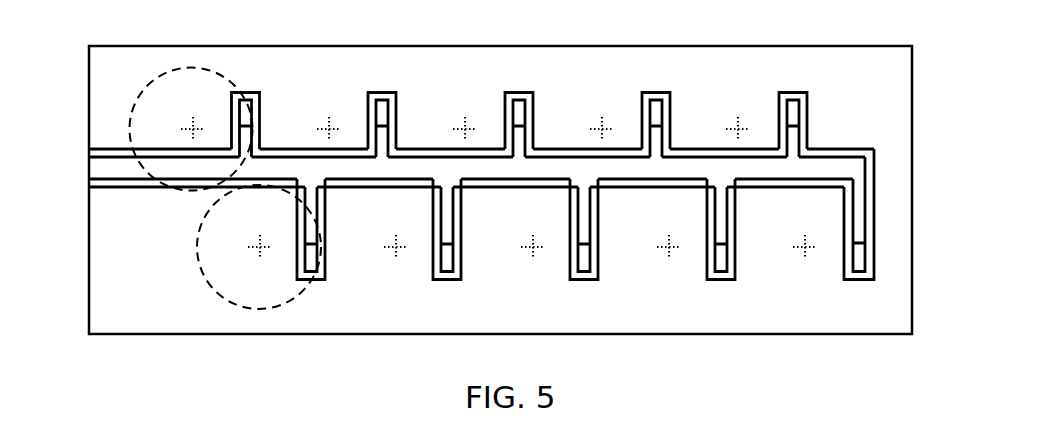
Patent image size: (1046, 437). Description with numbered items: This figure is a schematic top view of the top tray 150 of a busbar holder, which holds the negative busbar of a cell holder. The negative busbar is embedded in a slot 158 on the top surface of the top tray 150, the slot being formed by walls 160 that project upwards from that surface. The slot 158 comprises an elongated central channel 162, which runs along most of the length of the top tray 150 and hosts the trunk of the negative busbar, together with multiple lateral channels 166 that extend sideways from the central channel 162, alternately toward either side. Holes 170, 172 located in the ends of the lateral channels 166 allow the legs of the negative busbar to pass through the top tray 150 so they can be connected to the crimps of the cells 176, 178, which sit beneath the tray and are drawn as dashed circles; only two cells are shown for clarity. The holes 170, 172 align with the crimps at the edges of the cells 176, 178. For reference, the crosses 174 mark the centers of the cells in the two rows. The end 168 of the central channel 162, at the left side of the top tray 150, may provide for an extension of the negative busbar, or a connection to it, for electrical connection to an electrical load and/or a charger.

The top tray 150 is at (782, 44).
The slot 158 is at (680, 155).
The walls 160 is at (684, 187).
The central channel 162 is at (552, 153).
The lateral channels 166 is at (732, 215).
The end of the central channel 168 is at (88, 154).
The hole 170 is at (238, 108).
The hole 172 is at (300, 263).
The crosses 174 is at (395, 263).
The cell 176 is at (200, 68).
The cell 178 is at (253, 308).